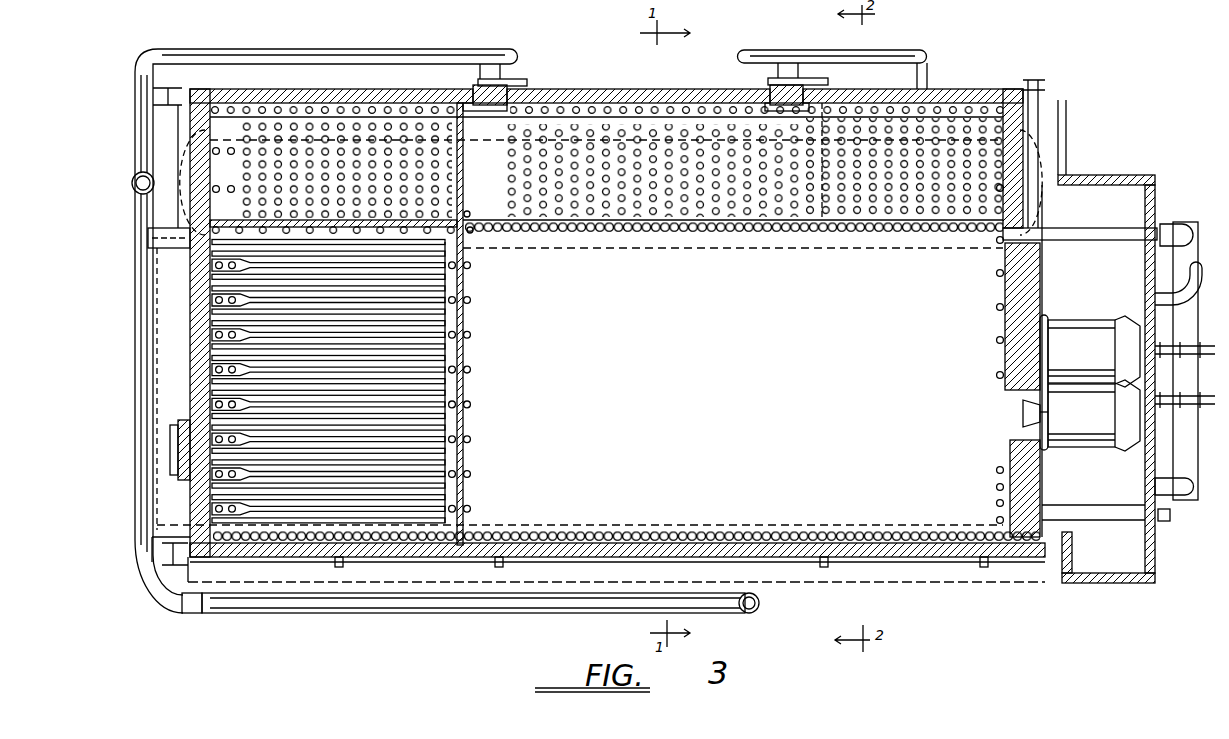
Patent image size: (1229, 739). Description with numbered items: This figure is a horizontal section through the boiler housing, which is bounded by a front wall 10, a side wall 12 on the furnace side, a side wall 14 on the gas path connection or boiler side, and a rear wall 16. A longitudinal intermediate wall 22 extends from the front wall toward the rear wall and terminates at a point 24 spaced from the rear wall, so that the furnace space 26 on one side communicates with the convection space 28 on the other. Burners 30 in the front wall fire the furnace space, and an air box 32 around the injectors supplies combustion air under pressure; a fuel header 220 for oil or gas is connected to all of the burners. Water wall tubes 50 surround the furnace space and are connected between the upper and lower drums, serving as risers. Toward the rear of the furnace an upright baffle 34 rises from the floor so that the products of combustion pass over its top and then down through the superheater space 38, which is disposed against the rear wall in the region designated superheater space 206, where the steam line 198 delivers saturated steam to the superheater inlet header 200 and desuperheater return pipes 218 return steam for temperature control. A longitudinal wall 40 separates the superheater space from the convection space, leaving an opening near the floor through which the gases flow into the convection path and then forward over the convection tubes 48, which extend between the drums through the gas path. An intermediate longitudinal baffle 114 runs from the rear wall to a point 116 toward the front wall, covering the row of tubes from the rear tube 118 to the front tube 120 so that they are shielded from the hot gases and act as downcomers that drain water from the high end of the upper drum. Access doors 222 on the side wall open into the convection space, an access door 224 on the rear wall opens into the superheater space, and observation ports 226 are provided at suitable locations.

The front wall 10 is at (1030, 480).
The side wall 12 is at (858, 553).
The side wall 14 is at (650, 92).
The rear wall 16 is at (195, 332).
The longitudinal intermediate wall 22 is at (765, 212).
The terminating point of intermediate wall 24 is at (472, 215).
The furnace space 26 is at (830, 480).
The convection space 28 is at (598, 127).
The burners 30 is at (1068, 338).
The air box 32 is at (1120, 583).
The upright baffle 34 is at (478, 318).
The superheater space 38 is at (290, 470).
The longitudinal wall 40 is at (333, 170).
The convection tubes 48 is at (955, 110).
The water wall tubes 50 is at (785, 235).
The intermediate longitudinal baffle 114 is at (448, 108).
The terminating point of baffle 116 is at (760, 110).
The rear tube 118 is at (218, 108).
The front tube 120 is at (765, 90).
The steam line 198 is at (760, 603).
The superheater inlet header 200 is at (133, 360).
The superheater space 206 is at (305, 500).
The desuperheater return pipes 218 is at (440, 49).
The fuel header 220 is at (1160, 272).
The access doors 222 is at (490, 87).
The access door 224 is at (178, 440).
The observation ports 226 is at (1085, 232).